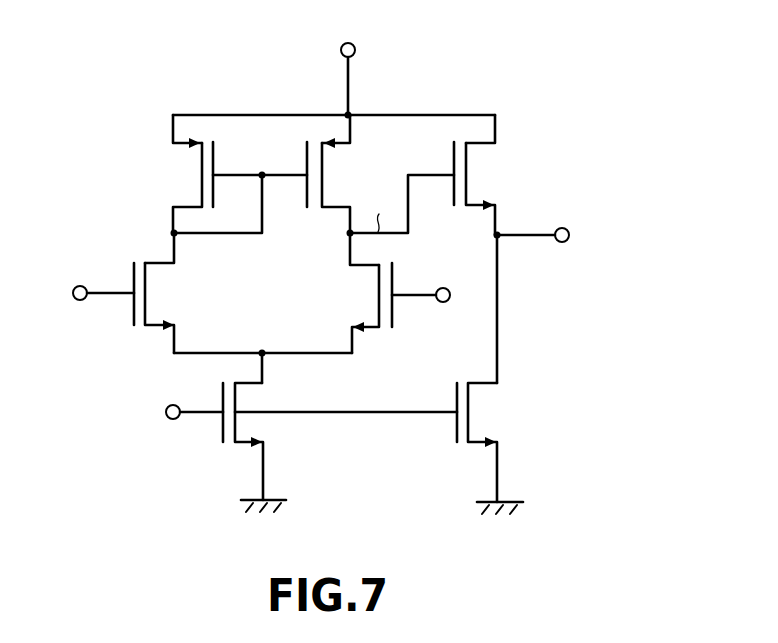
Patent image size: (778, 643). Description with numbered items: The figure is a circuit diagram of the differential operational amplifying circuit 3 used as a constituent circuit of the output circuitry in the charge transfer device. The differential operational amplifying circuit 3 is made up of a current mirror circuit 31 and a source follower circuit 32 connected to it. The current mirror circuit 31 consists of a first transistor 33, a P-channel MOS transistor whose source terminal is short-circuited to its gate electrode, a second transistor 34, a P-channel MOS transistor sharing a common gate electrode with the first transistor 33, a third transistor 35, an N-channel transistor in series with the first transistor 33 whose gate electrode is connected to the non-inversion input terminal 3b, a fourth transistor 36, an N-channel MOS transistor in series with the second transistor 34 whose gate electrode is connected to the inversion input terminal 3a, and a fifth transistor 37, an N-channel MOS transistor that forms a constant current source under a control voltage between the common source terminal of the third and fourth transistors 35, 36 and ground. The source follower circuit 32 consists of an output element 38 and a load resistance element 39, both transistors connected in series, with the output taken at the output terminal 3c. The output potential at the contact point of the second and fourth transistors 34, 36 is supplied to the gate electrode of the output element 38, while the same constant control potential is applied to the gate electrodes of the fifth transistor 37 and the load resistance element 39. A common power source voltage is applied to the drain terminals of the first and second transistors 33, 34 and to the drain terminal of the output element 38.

The differential operational amplifying circuit 3 is at (471, 100).
The current mirror circuit 31 is at (247, 151).
The source follower circuit 32 is at (515, 318).
The first transistor 33 is at (192, 204).
The second transistor 34 is at (322, 170).
The third transistor 35 is at (152, 331).
The fourth transistor 36 is at (378, 333).
The fifth transistor 37 is at (238, 448).
The output element 38 is at (466, 168).
The load resistance element 39 is at (453, 429).
The inversion input terminal 3a is at (443, 288).
The non-inversion input terminal 3b is at (80, 286).
The output terminal 3c is at (562, 228).